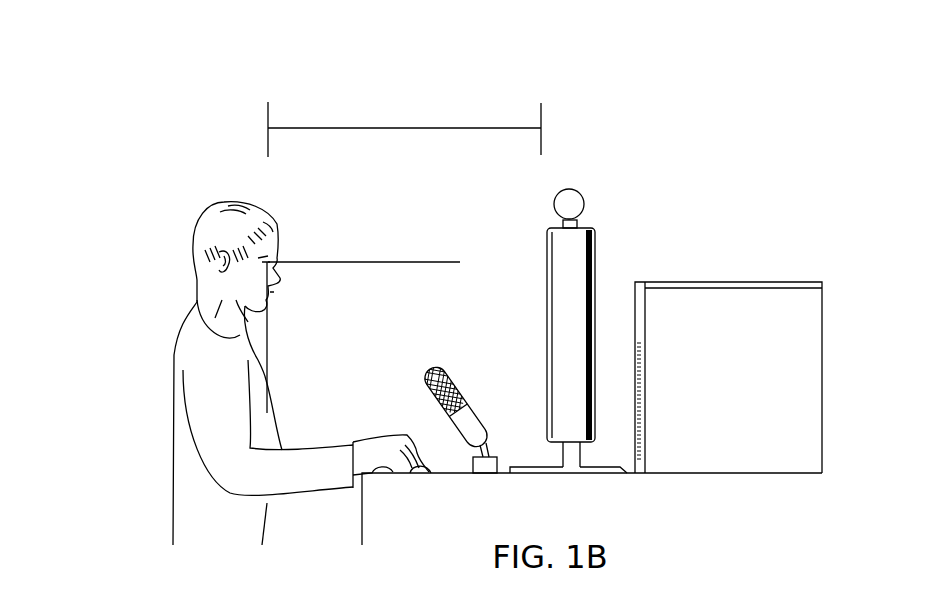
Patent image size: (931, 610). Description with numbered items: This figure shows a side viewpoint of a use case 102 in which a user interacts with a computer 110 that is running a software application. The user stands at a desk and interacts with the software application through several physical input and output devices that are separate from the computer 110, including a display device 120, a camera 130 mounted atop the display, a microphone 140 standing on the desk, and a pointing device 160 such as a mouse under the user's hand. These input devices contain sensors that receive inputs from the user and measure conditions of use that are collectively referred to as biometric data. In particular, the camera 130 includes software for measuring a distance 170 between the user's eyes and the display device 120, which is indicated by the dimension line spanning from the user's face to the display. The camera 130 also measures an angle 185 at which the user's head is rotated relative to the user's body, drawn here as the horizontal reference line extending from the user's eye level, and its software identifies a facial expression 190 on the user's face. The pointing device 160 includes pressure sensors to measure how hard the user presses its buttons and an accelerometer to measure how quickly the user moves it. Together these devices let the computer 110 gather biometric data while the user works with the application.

The second use case 102 is at (176, 80).
The computer 110 is at (773, 475).
The display device 120 is at (596, 240).
The camera 130 is at (585, 200).
The microphone 140 is at (488, 420).
The pointing device 160 is at (422, 476).
The distance 170 is at (381, 128).
The angle 185 is at (370, 262).
The facial expression 190 is at (279, 287).